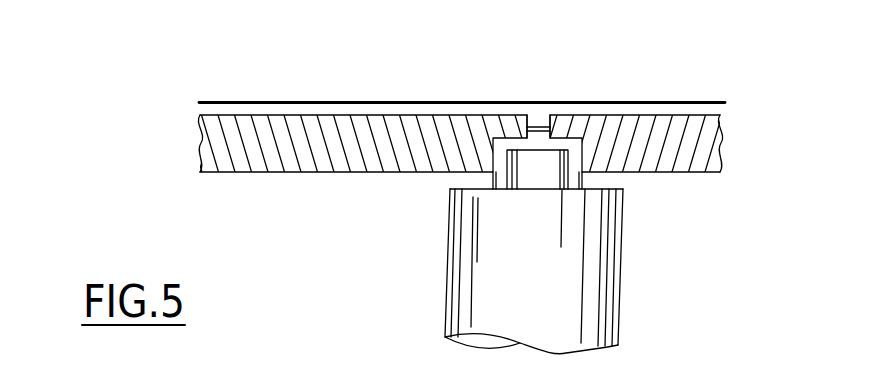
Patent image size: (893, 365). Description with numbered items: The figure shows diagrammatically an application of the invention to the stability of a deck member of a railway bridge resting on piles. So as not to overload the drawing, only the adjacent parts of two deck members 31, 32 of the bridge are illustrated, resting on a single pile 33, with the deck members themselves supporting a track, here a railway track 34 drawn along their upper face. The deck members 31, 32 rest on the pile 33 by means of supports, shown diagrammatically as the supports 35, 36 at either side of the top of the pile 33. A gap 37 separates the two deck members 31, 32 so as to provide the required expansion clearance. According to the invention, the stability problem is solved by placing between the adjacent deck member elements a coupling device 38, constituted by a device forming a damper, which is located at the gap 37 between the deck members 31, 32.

The deck member 31 is at (342, 145).
The deck member 32 is at (692, 145).
The pile 33 is at (534, 252).
The railway track 34 is at (397, 101).
The support 35 is at (475, 180).
The support 36 is at (600, 181).
The gap 37 is at (553, 106).
The coupling device 38 is at (536, 100).